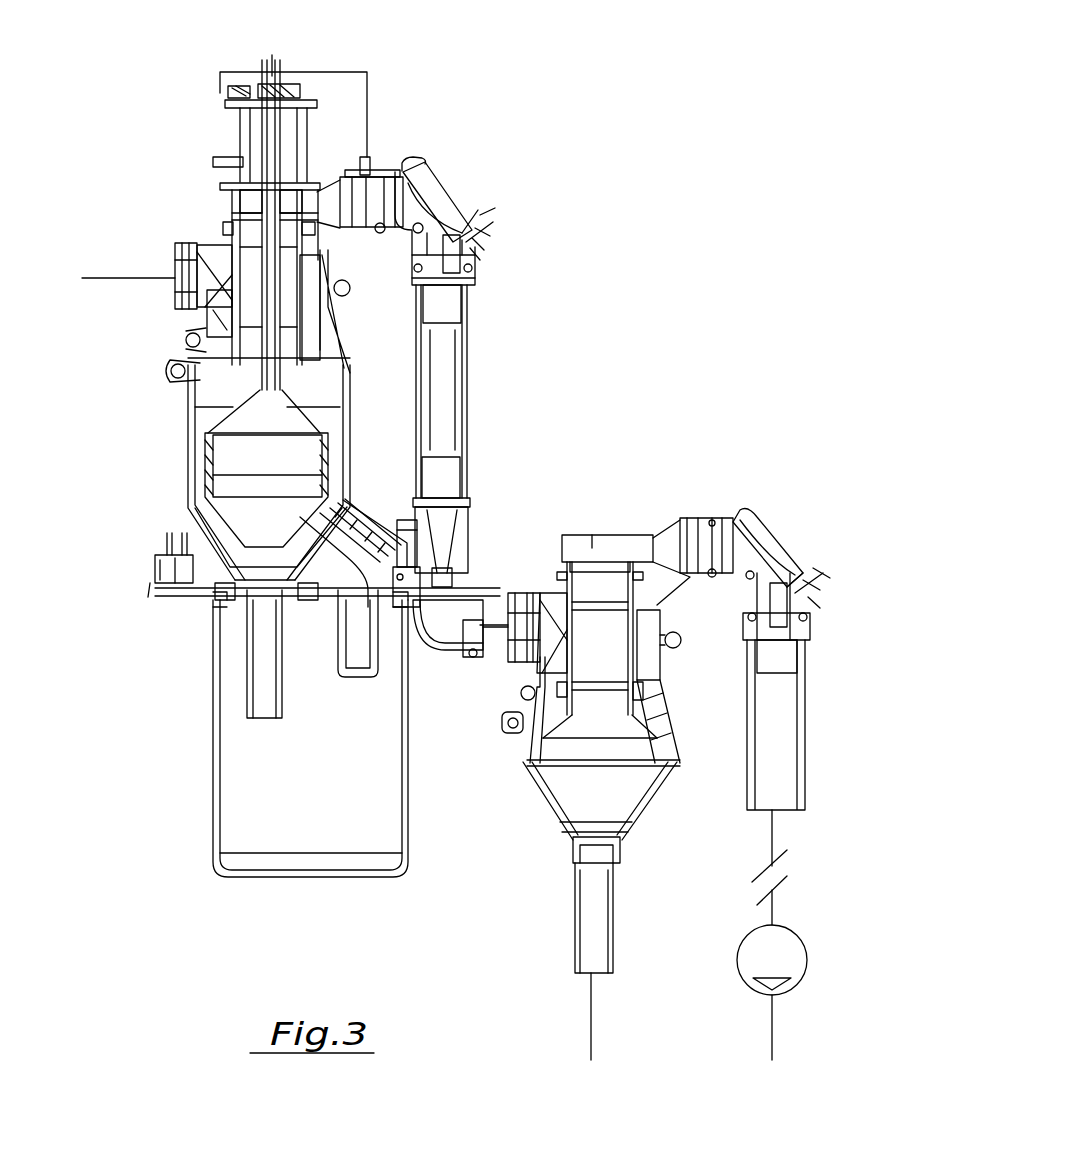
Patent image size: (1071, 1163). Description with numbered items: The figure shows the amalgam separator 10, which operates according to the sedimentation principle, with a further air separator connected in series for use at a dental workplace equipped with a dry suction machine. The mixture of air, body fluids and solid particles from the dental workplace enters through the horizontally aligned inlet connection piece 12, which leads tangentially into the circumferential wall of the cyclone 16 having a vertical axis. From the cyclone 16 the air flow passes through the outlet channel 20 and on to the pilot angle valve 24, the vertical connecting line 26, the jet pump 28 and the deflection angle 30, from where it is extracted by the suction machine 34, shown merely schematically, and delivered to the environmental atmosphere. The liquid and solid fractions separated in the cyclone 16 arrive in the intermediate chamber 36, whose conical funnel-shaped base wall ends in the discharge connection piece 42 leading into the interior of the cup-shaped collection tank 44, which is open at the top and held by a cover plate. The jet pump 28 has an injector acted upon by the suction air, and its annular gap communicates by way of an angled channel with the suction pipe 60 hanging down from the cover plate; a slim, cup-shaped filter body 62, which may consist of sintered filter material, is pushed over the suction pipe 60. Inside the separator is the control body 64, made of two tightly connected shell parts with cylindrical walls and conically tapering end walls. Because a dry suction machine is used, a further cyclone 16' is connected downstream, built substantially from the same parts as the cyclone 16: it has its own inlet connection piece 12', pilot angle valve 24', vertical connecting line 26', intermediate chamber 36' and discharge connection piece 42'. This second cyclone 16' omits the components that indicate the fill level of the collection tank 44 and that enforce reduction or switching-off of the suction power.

The amalgam separator 10 is at (688, 107).
The inlet connection piece 12 is at (157, 260).
The cyclone 16 is at (382, 222).
The outlet channel 20 is at (215, 372).
The pilot angle valve 24 is at (458, 190).
The vertical connecting line 26 is at (473, 379).
The jet pump 28 is at (443, 530).
The deflection angle 30 is at (440, 632).
The suction machine 34 is at (755, 957).
The intermediate chamber 36 is at (425, 502).
The discharge connection piece 42 is at (202, 654).
The collection tank 44 is at (213, 778).
The suction pipe 60 is at (357, 630).
The filter body 62 is at (353, 675).
The control body 64 is at (277, 450).
The inlet connection piece 12' is at (523, 605).
The further cyclone 16' is at (628, 604).
The pilot angle valve 24' is at (781, 541).
The vertical connecting line 26' is at (746, 711).
The intermediate chamber 36' is at (578, 812).
The discharge connection piece 42' is at (546, 961).